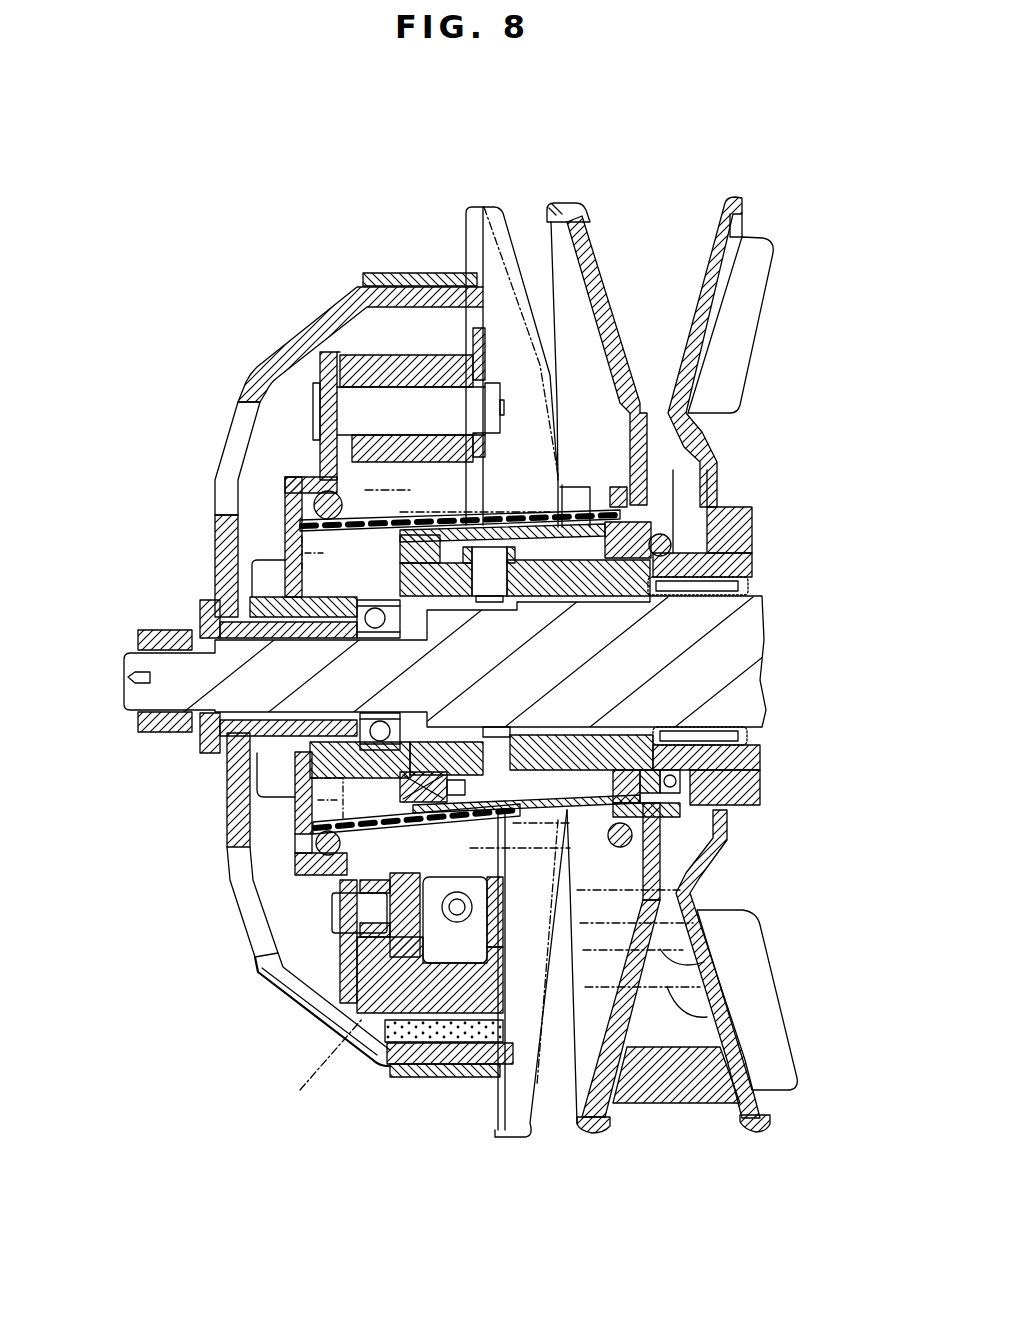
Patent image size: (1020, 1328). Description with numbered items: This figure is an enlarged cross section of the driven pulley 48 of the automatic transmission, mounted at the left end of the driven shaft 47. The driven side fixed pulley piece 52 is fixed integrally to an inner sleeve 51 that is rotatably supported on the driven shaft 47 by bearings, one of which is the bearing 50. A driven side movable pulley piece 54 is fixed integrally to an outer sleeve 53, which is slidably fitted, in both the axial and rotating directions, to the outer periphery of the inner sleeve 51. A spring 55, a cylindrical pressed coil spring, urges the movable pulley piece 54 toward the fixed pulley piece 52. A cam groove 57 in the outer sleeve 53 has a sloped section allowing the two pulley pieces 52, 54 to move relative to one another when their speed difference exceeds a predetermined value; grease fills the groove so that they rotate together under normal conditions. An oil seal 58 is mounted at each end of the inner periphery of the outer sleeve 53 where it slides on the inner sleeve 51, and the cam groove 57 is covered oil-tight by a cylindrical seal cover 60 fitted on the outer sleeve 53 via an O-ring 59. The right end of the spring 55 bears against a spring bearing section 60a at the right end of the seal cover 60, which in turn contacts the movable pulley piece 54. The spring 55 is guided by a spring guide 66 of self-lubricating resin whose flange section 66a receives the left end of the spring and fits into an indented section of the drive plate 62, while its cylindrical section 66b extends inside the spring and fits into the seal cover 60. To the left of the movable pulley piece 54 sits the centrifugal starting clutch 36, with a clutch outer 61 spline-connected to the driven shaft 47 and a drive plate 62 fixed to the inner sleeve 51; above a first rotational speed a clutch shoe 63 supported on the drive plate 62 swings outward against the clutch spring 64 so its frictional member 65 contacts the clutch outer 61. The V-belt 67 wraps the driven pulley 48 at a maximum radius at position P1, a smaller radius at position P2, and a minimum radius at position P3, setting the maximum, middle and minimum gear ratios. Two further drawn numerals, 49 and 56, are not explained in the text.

The centrifugal starting clutch 36 is at (197, 917).
The driven shaft 47 is at (122, 670).
The driven pulley 48 is at (285, 168).
The shaft 49 is at (697, 588).
The bearing 50 is at (378, 640).
The inner sleeve 51 is at (735, 558).
The driven side fixed pulley piece 52 is at (693, 445).
The outer sleeve 53 is at (612, 560).
The driven side movable pulley piece 54 is at (585, 232).
The spring 55 is at (525, 848).
The bolt 56 is at (488, 585).
The cam groove 57 is at (563, 560).
The oil seal 58 is at (410, 795).
The O-ring 59 is at (463, 790).
The seal cover 60 is at (560, 805).
The spring bearing section 60a is at (636, 515).
The clutch outer 61 is at (265, 360).
The drive plate 62 is at (293, 478).
The clutch shoe 63 is at (312, 1066).
The clutch spring 64 is at (468, 892).
The frictional member 65 is at (388, 1068).
The spring guide 66 is at (460, 510).
The flange section 66a is at (300, 507).
The cylindrical section 66b is at (412, 518).
The V-belt 67 is at (680, 1092).
The position P1 is at (722, 1108).
The position P2 is at (710, 1018).
The position P3 is at (700, 962).